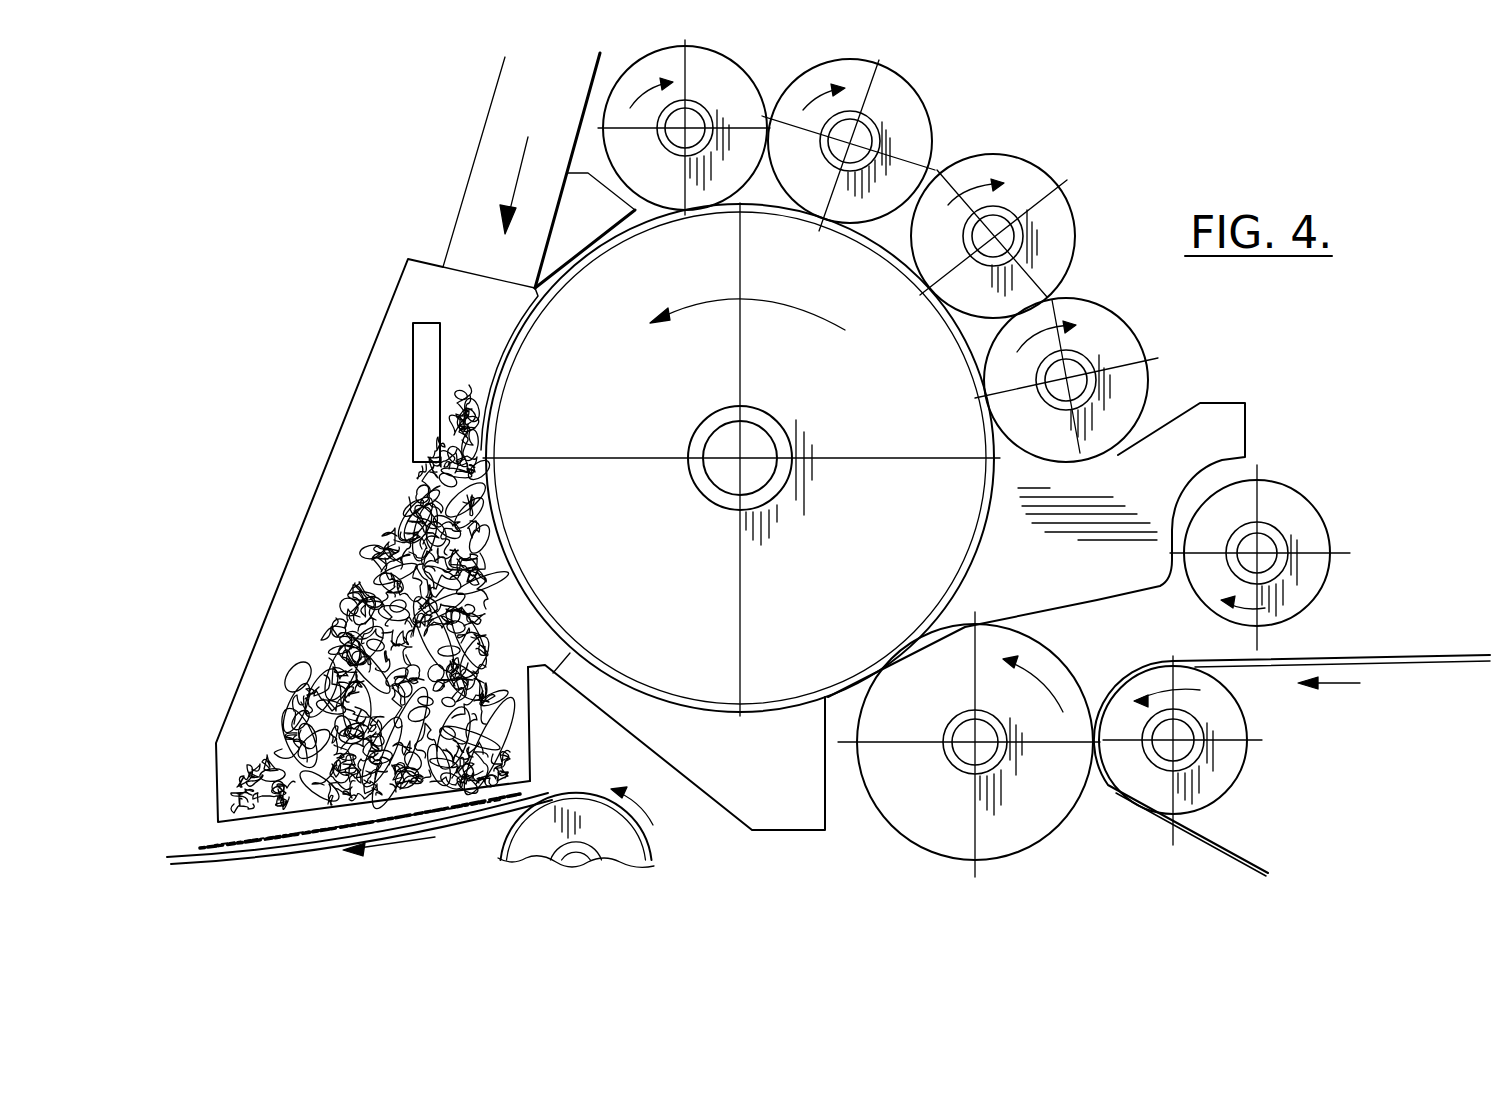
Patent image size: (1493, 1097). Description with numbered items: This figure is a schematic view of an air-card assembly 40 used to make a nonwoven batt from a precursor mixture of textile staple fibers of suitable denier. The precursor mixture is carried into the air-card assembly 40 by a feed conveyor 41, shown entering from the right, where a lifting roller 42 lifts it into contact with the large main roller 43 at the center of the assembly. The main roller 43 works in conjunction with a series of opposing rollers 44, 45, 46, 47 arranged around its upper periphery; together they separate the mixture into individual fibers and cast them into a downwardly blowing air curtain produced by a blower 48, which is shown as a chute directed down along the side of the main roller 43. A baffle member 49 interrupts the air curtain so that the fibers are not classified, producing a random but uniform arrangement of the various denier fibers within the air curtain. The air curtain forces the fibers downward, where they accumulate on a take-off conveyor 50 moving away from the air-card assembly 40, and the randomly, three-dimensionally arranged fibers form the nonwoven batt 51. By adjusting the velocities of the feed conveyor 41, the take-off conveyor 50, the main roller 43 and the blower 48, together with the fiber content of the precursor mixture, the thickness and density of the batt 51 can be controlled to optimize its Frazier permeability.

The air-card assembly 40 is at (356, 266).
The feed conveyor 41 is at (1412, 662).
The lifting roller 42 is at (1062, 822).
The main roller 43 is at (912, 360).
The opposing roller 44 is at (1148, 378).
The opposing roller 45 is at (1040, 154).
The opposing roller 46 is at (895, 72).
The opposing roller 47 is at (748, 72).
The blower 48 is at (480, 148).
The baffle member 49 is at (412, 430).
The take-off conveyor 50 is at (560, 800).
The nonwoven batt 51 is at (217, 840).